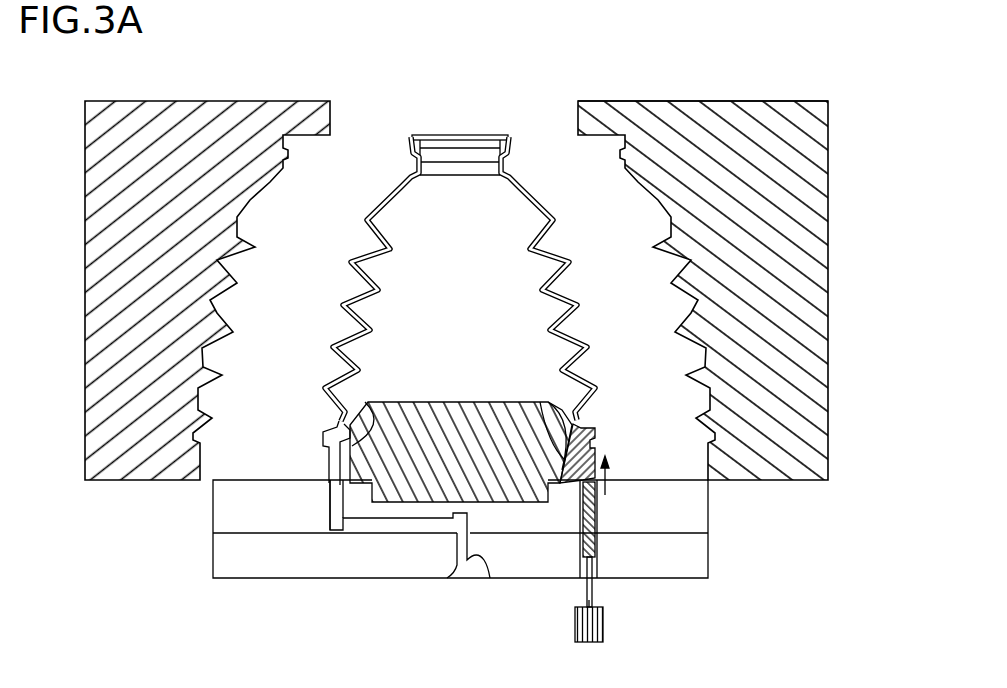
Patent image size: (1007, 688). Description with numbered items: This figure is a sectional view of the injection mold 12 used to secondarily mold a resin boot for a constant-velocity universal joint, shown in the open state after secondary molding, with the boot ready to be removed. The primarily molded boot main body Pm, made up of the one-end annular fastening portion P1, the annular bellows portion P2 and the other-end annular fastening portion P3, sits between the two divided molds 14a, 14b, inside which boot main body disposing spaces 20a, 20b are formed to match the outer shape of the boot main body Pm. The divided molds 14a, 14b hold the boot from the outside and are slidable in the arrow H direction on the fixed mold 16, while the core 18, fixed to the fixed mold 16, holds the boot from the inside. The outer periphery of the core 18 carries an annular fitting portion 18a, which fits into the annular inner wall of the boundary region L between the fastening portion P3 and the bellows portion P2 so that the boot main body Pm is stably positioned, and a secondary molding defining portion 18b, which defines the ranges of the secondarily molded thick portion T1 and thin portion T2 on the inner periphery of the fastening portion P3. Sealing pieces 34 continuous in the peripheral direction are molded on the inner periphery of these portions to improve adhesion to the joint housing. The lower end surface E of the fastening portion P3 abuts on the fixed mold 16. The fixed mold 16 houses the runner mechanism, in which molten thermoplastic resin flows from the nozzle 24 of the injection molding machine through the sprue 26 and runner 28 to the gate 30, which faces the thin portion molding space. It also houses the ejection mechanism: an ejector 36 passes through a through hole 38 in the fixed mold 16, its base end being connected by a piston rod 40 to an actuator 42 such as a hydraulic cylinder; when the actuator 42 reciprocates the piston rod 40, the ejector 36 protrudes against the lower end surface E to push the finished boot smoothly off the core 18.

The injection mold 12 is at (796, 92).
The divided mold 14a is at (207, 101).
The divided mold 14b is at (678, 101).
The fixed mold 16 is at (213, 532).
The core 18 is at (453, 401).
The annular fitting portion 18a is at (332, 424).
The secondary molding defining portion 18b is at (328, 465).
The boot main body disposing space 20a is at (245, 252).
The boot main body disposing space 20b is at (665, 252).
The nozzle 24 is at (452, 572).
The sprue 26 is at (476, 556).
The runner 28 is at (350, 478).
The injecting/charging gate 30 is at (352, 480).
The sealing piece 34 is at (548, 418).
The ejector 36 is at (598, 505).
The through hole 38 is at (595, 585).
The piston rod 40 is at (600, 605).
The actuator 42 is at (608, 635).
The arrow H direction H is at (388, 104).
The one-end annular fastening portion P1 is at (402, 152).
The annular bellows portion P2 is at (347, 249).
The other-end annular fastening portion P3 is at (316, 441).
The boot main body Pm is at (527, 259).
The thick portion T1 is at (580, 482).
The thin portion T2 is at (372, 402).
The lower end surface E is at (328, 484).
The boundary region L is at (592, 416).